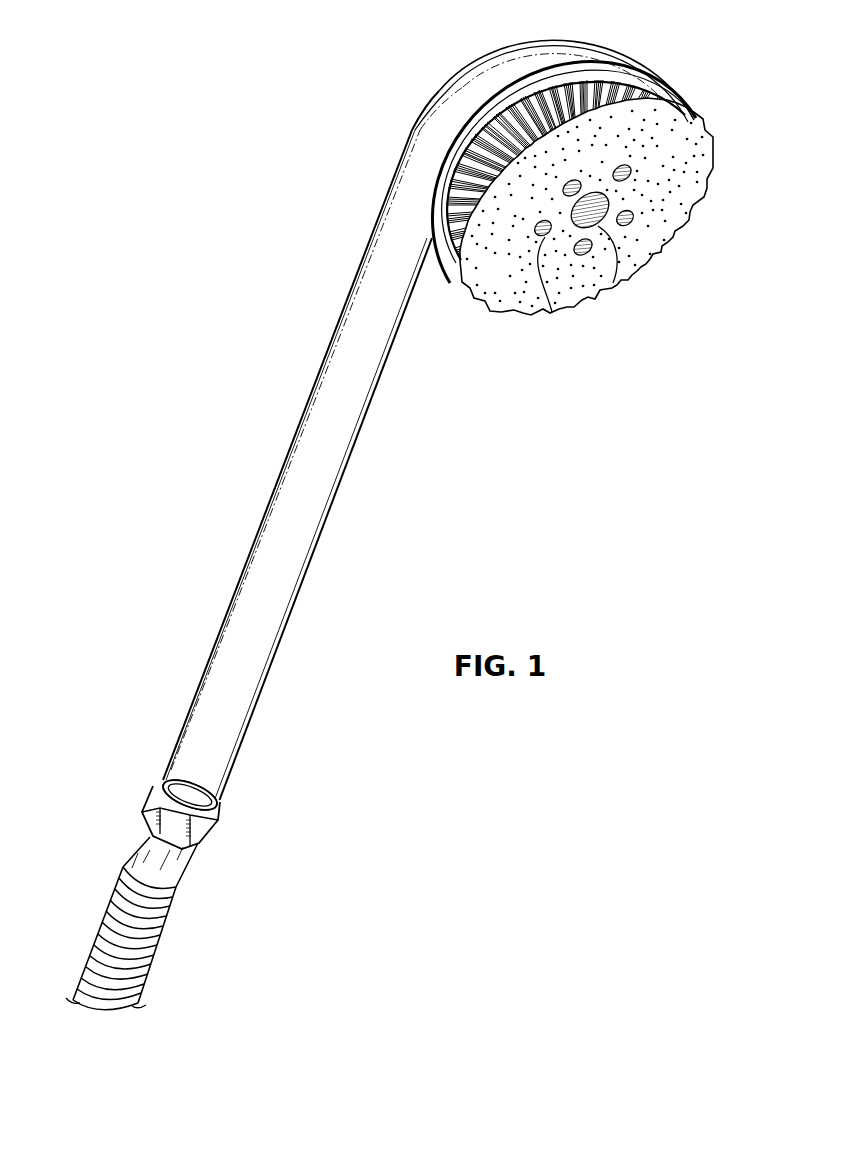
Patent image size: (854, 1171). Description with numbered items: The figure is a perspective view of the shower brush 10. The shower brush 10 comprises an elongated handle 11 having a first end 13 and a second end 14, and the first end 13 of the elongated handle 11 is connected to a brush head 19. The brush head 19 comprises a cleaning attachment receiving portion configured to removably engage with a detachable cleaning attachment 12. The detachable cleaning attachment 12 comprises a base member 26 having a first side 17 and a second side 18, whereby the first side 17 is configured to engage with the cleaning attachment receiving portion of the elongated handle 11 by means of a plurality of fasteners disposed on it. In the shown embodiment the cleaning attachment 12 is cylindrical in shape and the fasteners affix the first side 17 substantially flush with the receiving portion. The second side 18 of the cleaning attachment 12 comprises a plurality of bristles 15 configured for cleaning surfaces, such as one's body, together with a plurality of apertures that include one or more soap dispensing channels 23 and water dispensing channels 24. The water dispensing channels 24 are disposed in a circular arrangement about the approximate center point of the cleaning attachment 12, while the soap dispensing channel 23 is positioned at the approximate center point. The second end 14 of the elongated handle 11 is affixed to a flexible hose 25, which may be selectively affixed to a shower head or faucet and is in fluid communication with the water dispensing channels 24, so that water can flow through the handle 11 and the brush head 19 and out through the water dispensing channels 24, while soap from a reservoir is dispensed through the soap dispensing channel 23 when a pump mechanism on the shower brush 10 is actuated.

The shower brush 10 is at (260, 144).
The elongated handle 11 is at (315, 450).
The detachable cleaning attachment 12 is at (692, 134).
The first end 13 is at (422, 158).
The second end 14 is at (170, 770).
The bristles 15 is at (633, 257).
The first side 17 is at (603, 67).
The second side 18 is at (675, 100).
The brush head 19 is at (500, 73).
The soap dispensing channel 23 is at (613, 283).
The water dispensing channels 24 is at (552, 312).
The flexible hose 25 is at (170, 926).
The base member 26 is at (630, 72).